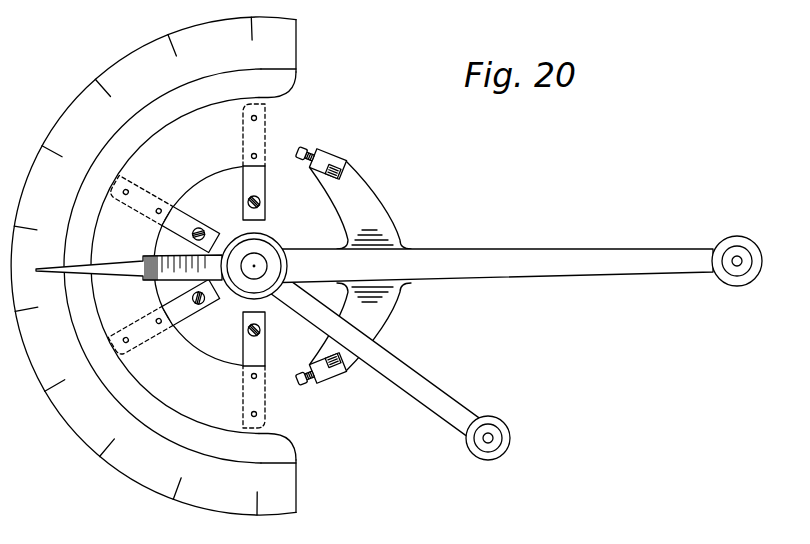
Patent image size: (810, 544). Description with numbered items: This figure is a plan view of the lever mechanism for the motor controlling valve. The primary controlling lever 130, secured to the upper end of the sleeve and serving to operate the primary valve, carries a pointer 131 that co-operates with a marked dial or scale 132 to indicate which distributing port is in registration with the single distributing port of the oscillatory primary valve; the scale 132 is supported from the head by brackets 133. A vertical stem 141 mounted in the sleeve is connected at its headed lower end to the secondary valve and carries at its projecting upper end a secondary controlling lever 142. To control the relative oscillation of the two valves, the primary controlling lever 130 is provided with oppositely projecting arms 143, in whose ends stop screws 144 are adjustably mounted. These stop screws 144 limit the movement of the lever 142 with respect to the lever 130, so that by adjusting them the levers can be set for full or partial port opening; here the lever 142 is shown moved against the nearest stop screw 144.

The primary controlling lever 130 is at (483, 260).
The pointer 131 is at (99, 266).
The marked dial or scale 132 is at (77, 132).
The brackets 133 is at (248, 183).
The vertical stem 141 is at (257, 264).
The secondary controlling lever 142 is at (430, 395).
The arms 143 is at (373, 217).
The stop screws 144 is at (341, 172).